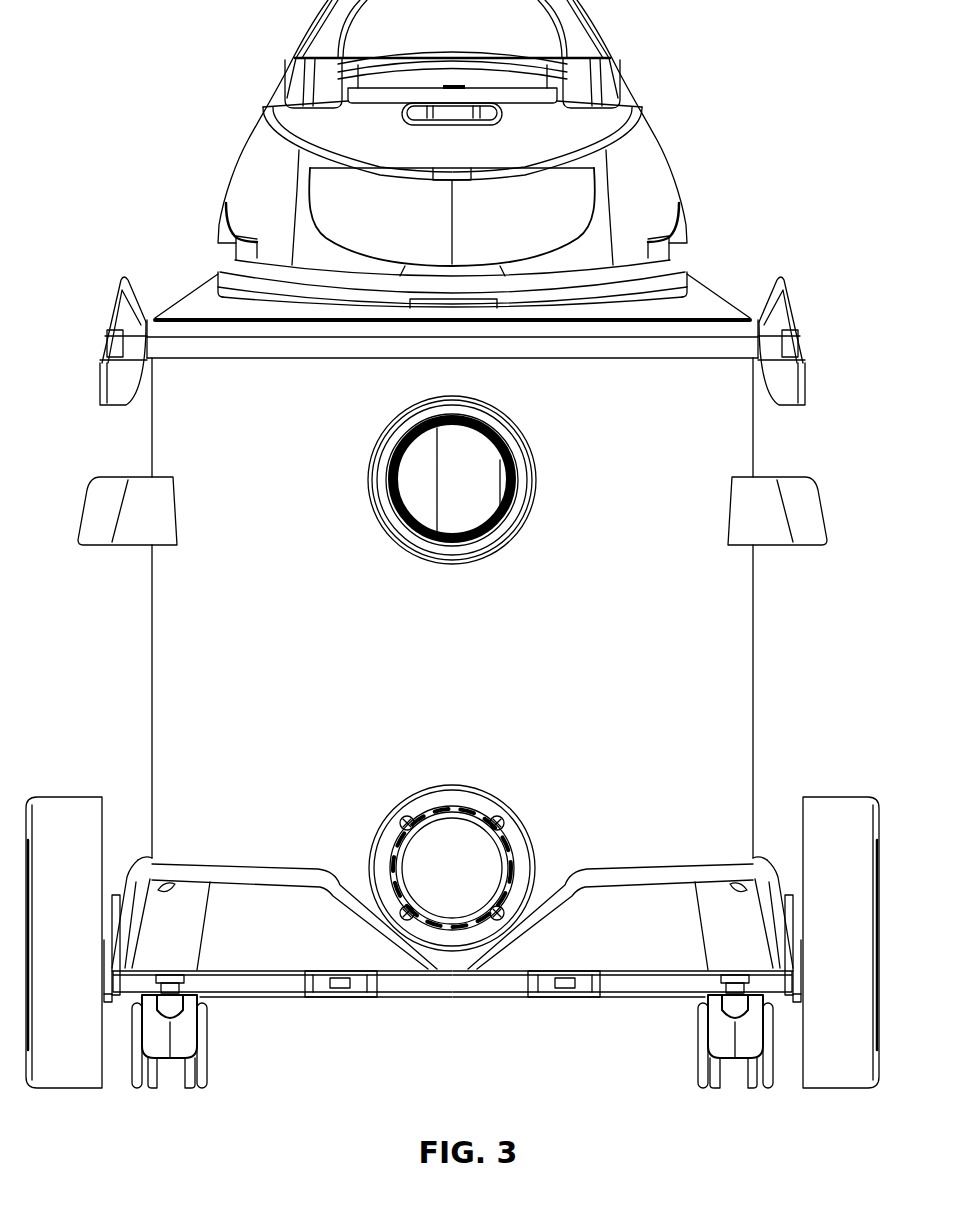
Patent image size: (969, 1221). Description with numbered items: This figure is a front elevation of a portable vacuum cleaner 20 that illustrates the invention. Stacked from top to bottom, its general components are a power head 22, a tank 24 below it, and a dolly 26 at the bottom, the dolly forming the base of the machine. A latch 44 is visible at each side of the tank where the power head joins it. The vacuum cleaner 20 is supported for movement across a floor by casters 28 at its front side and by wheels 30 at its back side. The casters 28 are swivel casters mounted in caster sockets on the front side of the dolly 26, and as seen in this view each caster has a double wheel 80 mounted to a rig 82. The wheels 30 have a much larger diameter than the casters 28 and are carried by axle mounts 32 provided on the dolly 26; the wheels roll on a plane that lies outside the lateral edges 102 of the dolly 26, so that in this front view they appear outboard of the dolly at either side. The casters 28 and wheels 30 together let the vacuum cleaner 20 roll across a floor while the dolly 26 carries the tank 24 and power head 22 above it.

The portable vacuum cleaner 20 is at (770, 630).
The power head 22 is at (650, 156).
The tank 24 is at (727, 451).
The dolly 26 is at (666, 905).
The casters 28 is at (228, 1058).
The wheels 30 is at (840, 1070).
The axle mounts 32 is at (120, 895).
The latch 44 is at (776, 292).
The double wheel 80 is at (150, 1077).
The rig 82 is at (180, 1033).
The lateral edges 102 is at (112, 997).